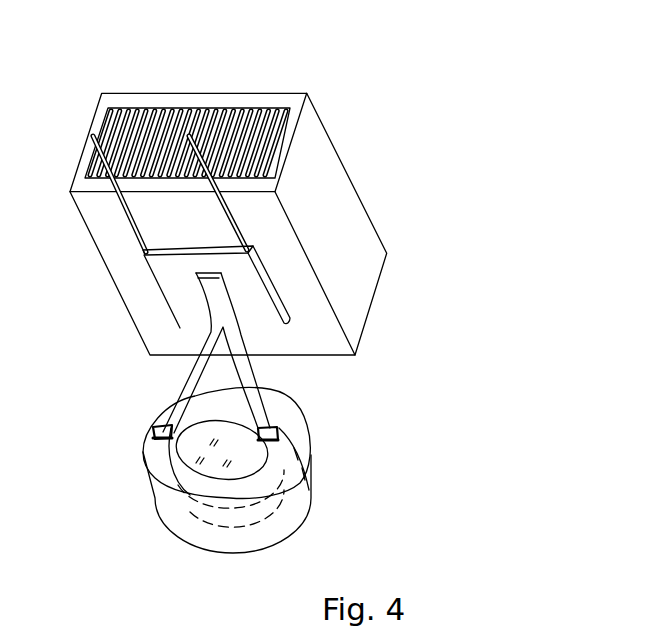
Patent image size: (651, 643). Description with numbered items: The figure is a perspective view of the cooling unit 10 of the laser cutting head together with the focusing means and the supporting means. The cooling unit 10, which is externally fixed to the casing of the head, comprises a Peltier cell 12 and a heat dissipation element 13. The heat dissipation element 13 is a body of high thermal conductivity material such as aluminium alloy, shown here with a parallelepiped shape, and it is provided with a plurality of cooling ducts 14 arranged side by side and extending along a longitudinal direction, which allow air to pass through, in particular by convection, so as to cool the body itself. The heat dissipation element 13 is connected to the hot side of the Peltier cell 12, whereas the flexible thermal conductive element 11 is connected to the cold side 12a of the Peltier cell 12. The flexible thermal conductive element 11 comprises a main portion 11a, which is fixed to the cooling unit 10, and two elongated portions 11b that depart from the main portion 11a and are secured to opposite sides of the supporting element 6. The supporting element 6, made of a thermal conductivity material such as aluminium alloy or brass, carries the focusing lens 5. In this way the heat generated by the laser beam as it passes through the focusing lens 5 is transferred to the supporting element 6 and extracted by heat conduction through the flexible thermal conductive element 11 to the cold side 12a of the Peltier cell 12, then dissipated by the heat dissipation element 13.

The cooling unit 10 is at (95, 437).
The heat dissipation element 13 is at (256, 100).
The cooling ducts 14 is at (163, 110).
The Peltier cell 12 is at (262, 270).
The cold side 12a is at (258, 312).
The flexible thermal conductive element 11 is at (207, 327).
The main portion 11a is at (207, 293).
The elongated portions 11b is at (262, 388).
The supporting element 6 is at (222, 545).
The focusing lens 5 is at (225, 449).